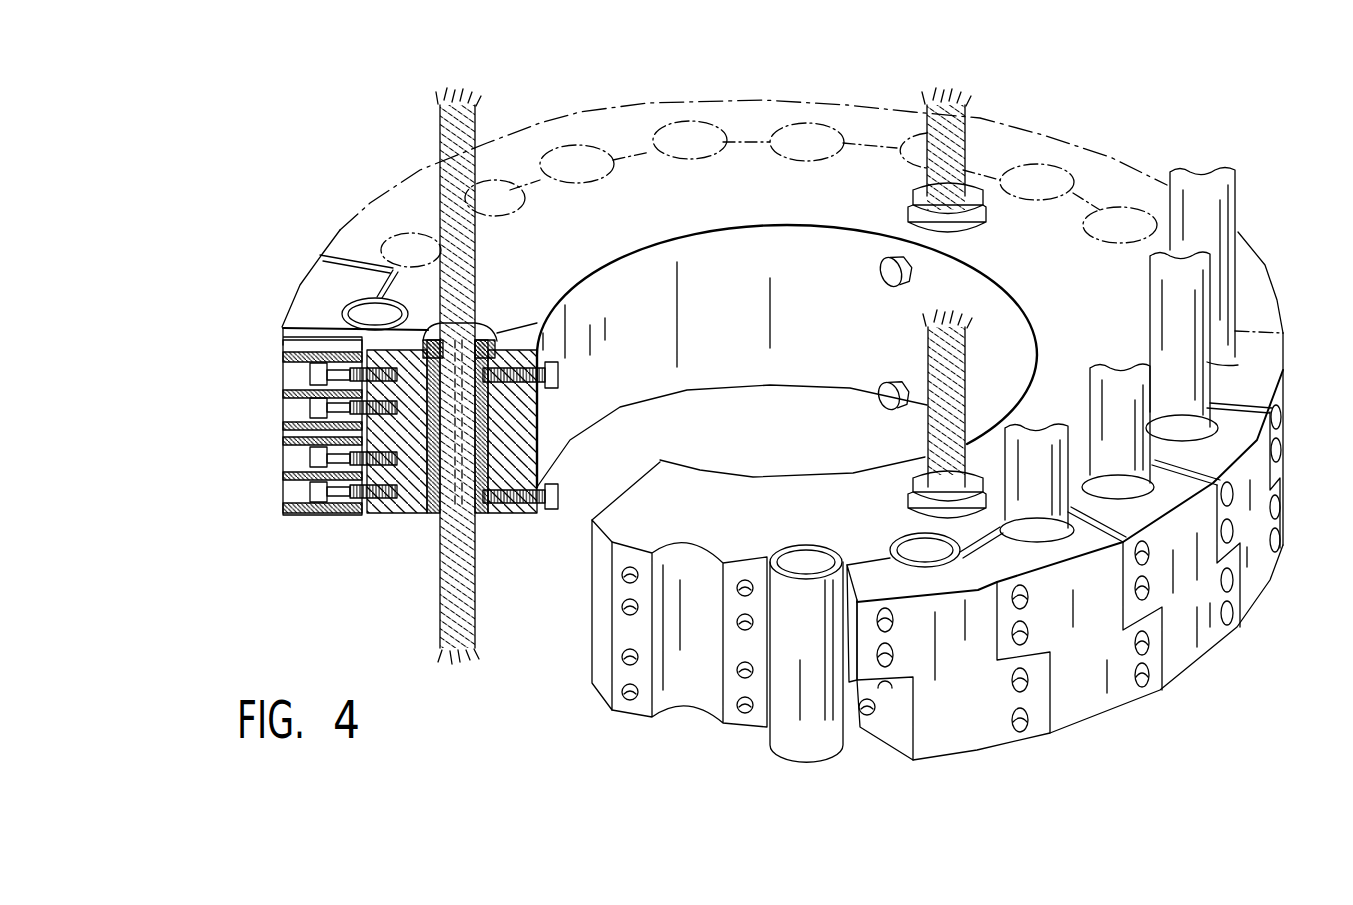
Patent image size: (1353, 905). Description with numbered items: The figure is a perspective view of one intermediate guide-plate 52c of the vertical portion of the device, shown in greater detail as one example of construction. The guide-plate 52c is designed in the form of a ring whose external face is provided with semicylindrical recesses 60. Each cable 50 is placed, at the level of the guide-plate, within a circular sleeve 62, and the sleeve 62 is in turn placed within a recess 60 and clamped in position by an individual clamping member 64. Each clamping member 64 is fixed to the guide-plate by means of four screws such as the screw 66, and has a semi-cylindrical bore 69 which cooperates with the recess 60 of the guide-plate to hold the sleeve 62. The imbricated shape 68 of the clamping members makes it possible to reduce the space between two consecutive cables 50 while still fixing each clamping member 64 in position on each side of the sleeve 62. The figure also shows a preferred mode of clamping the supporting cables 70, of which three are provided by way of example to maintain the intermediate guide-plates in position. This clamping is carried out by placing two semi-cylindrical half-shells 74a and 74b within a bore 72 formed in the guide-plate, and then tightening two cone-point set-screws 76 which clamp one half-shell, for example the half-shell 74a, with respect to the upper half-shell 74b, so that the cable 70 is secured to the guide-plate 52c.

The cable 50 is at (1187, 290).
The intermediate guide-plate 52c is at (1043, 222).
The semicylindrical recess 60 is at (680, 547).
The circular sleeve 62 is at (808, 578).
The clamping member 64 is at (1000, 737).
The screw 66 is at (340, 508).
The imbricated shape 68 is at (900, 676).
The semi-cylindrical bore 69 is at (922, 560).
The supporting cable 70 is at (947, 130).
The bore 72 is at (483, 433).
The semi-cylindrical half-shell 74a is at (497, 333).
The semi-cylindrical half-shell 74b is at (430, 333).
The cone-point set-screw 76 is at (557, 374).